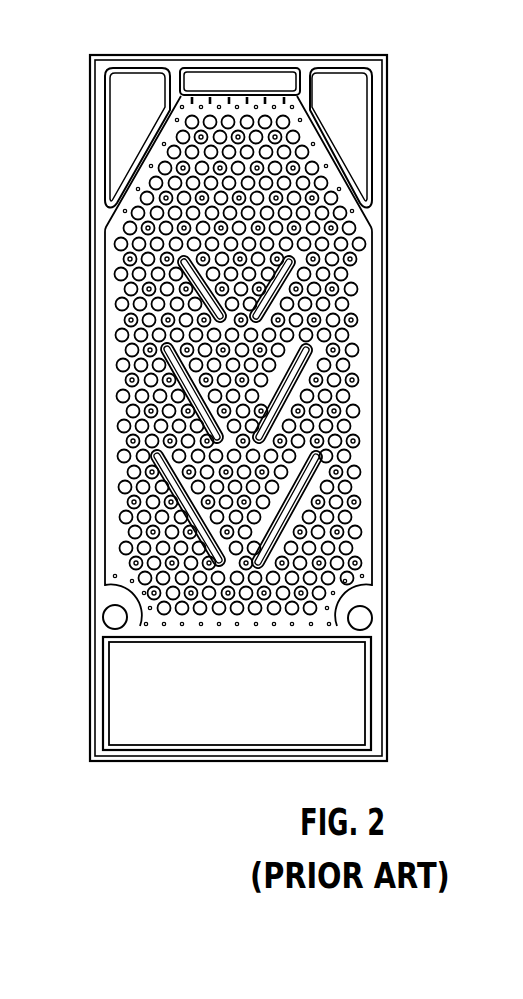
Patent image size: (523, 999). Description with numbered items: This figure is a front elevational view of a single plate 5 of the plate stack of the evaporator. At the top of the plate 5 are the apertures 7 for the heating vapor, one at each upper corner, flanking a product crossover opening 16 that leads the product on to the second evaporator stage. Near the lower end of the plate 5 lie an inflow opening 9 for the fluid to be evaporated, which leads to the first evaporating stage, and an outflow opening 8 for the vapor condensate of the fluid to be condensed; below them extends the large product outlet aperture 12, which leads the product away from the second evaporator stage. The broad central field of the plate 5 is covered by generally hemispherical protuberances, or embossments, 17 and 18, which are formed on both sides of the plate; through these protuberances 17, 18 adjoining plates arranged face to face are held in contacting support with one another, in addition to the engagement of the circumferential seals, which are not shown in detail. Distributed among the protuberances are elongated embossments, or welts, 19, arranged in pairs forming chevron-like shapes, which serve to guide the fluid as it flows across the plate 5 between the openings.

The plate 5 is at (400, 280).
The apertures for the heating vapor 7 is at (122, 103).
The outflow opening for the vapor condensate 8 is at (103, 616).
The inflow opening 9 is at (372, 618).
The product outlet aperture 12 is at (192, 731).
The product crossover opening 16 is at (257, 73).
The hemispherical protuberance 17 is at (115, 304).
The hemispherical protuberance 18 is at (125, 381).
The elongated embossment 19 is at (310, 357).